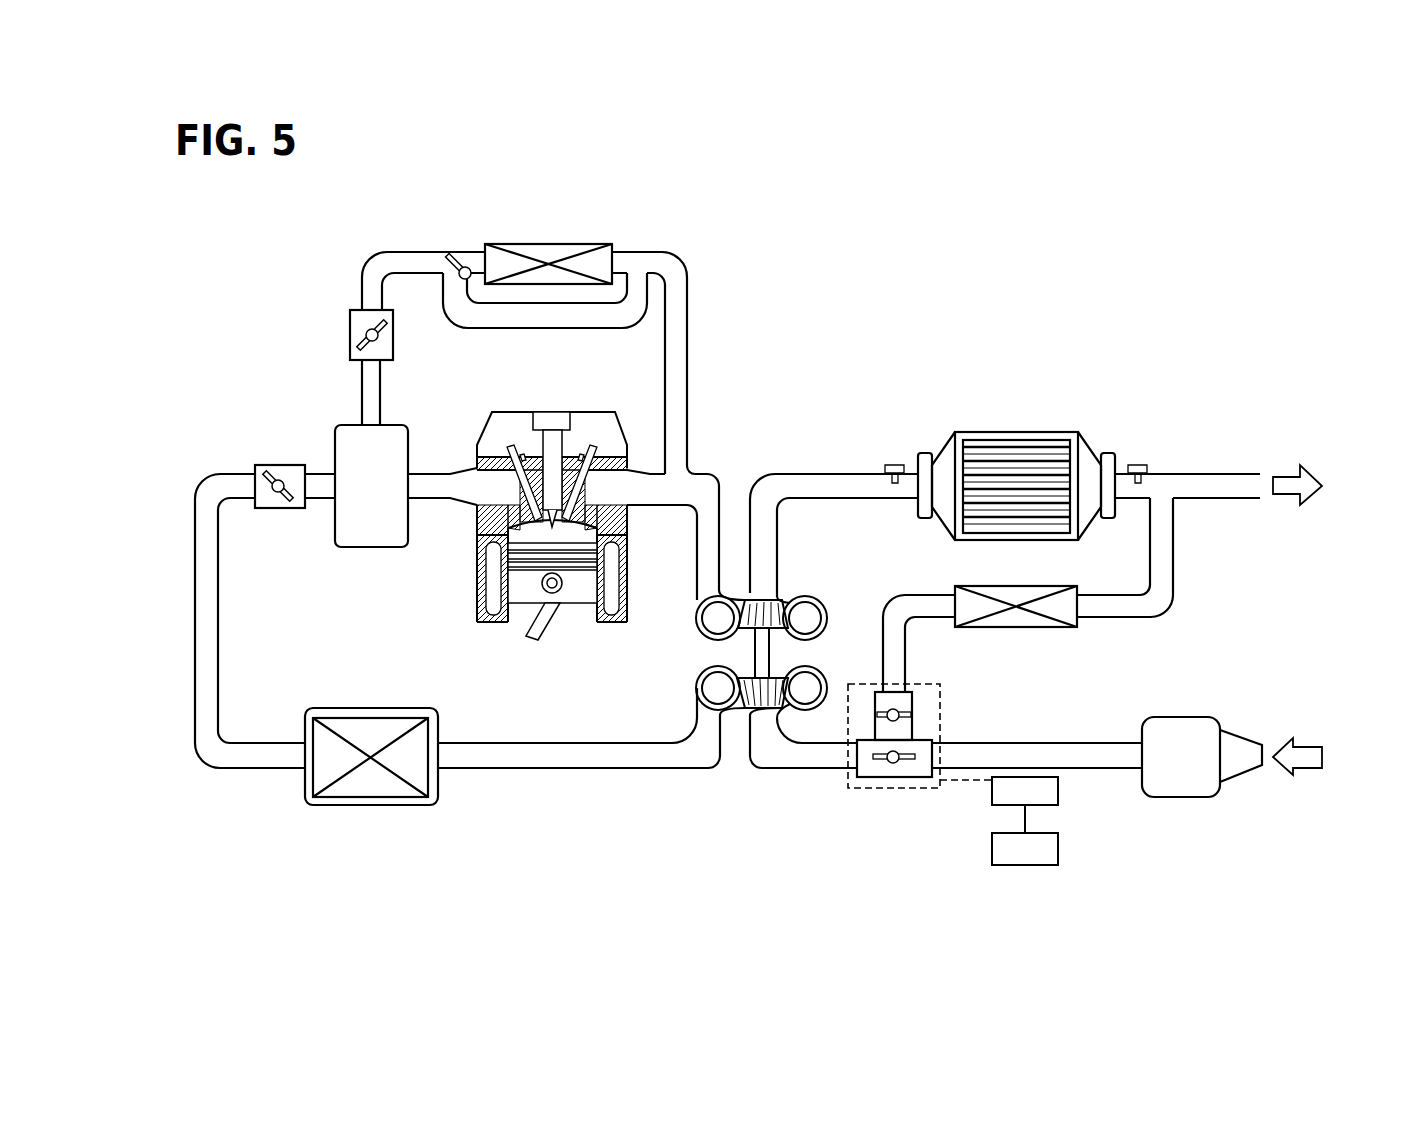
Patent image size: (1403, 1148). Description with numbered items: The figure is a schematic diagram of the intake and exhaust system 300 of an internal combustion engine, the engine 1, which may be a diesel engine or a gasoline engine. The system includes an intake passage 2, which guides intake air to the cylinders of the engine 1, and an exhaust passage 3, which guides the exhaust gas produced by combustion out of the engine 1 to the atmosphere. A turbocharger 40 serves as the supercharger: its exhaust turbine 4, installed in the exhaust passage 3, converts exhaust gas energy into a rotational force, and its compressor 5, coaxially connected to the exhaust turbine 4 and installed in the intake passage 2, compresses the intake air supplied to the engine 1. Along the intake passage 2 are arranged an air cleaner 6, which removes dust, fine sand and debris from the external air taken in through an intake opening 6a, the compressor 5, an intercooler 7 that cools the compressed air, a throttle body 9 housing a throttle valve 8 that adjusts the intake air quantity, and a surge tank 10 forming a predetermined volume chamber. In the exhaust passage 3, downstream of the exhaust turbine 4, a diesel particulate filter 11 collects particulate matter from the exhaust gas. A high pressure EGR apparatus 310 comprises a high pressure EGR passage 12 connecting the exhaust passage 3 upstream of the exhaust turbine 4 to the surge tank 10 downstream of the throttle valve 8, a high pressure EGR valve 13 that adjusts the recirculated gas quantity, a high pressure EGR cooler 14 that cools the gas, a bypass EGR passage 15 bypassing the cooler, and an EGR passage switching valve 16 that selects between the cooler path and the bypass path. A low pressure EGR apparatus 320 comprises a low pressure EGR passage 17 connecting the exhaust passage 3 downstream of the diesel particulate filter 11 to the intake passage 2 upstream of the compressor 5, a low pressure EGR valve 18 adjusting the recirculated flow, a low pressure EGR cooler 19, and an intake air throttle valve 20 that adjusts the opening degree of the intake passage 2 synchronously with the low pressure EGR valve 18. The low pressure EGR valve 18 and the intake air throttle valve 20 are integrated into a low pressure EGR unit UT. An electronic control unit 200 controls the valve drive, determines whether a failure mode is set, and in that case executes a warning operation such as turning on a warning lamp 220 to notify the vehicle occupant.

The engine 1 is at (474, 569).
The intake passage 2 is at (610, 770).
The exhaust passage 3 is at (806, 472).
The exhaust turbine 4 is at (776, 604).
The compressor 5 is at (749, 712).
The air cleaner 6 is at (1232, 790).
The intake opening 6a is at (1265, 763).
The intercooler 7 is at (372, 806).
The throttle valve 8 is at (283, 496).
The throttle body 9 is at (280, 465).
The surge tank 10 is at (346, 426).
The diesel particulate filter (DPF) 11 is at (1023, 432).
The high pressure EGR passage 12 is at (679, 300).
The high pressure EGR valve 13 is at (355, 335).
The high pressure EGR cooler 14 is at (568, 244).
The bypass EGR passage 15 is at (549, 315).
The EGR passage switching valve 16 is at (458, 253).
The low pressure EGR passage 17 is at (1176, 580).
The low pressure EGR valve 18 is at (910, 713).
The low pressure EGR cooler 19 is at (1012, 628).
The intake air throttle valve 20 is at (880, 760).
The turbocharger 40 is at (786, 698).
The electronic control unit (ECU) 200 is at (1048, 806).
The warning lamp 220 is at (1058, 848).
The intake and exhaust system 300 is at (801, 356).
The high pressure EGR apparatus 310 is at (668, 241).
The low pressure EGR apparatus 320 is at (835, 819).
The low pressure EGR unit UT is at (920, 772).